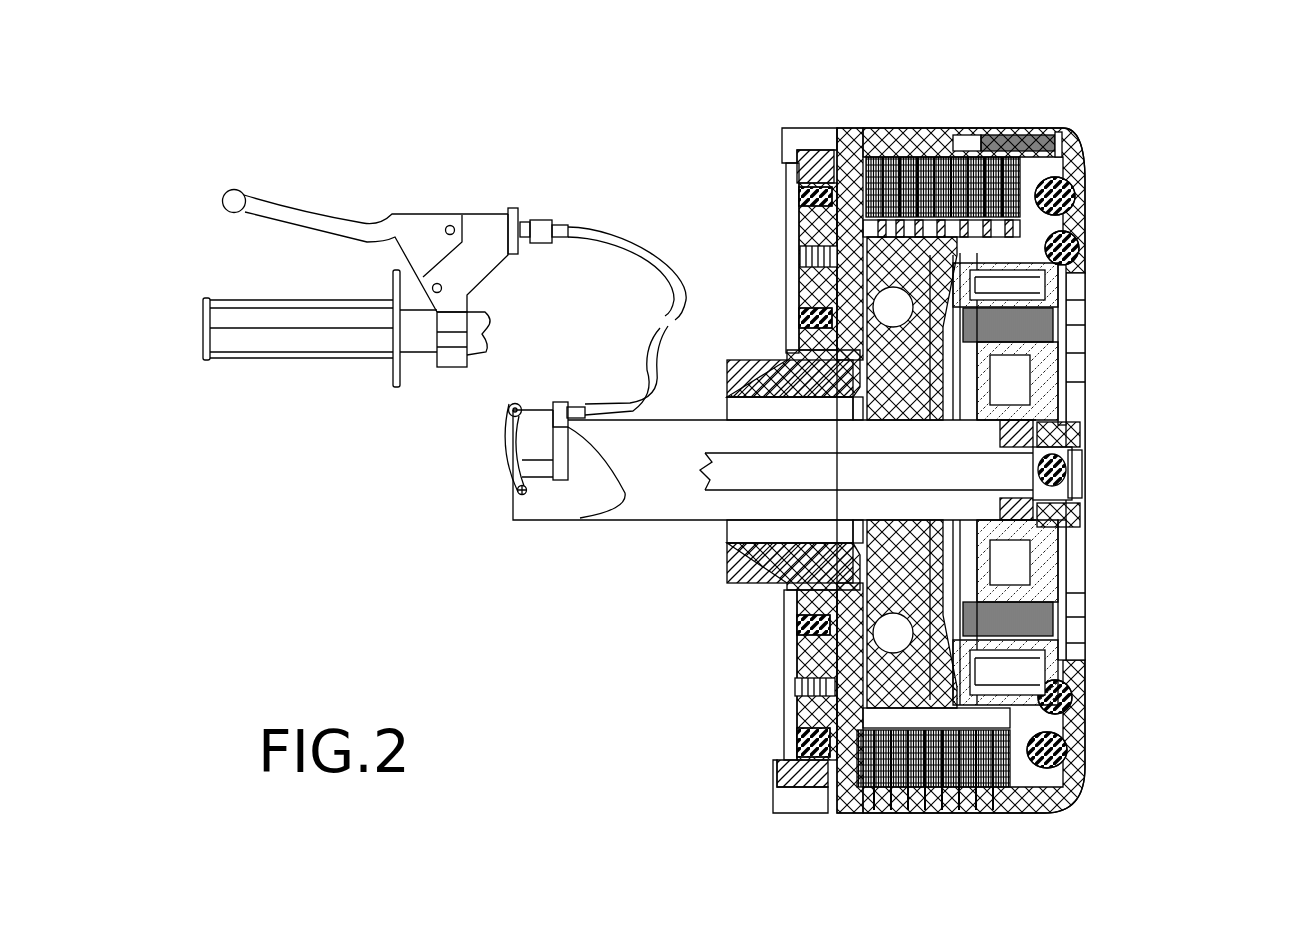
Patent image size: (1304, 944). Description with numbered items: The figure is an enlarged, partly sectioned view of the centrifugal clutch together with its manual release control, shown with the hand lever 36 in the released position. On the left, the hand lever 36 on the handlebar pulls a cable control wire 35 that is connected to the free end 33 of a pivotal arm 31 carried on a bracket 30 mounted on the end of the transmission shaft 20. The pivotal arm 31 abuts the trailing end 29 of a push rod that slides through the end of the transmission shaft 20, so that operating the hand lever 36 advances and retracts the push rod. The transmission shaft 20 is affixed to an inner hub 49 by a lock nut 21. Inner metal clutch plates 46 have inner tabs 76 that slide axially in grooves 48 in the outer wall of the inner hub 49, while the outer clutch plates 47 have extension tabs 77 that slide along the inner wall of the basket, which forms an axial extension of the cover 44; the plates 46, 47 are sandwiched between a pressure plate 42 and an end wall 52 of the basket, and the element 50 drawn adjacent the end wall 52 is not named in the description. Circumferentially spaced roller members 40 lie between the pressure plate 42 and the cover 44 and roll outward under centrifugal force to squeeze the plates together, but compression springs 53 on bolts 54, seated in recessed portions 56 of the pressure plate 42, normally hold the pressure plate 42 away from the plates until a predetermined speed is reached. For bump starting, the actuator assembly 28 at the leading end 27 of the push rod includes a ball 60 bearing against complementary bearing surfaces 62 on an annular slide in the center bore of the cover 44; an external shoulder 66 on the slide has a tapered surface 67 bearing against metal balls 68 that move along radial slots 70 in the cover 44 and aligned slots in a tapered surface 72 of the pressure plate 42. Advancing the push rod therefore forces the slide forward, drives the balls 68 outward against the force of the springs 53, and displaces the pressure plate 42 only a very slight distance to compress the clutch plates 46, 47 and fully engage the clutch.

The transmission shaft 20 is at (657, 523).
The lock nut 21 is at (930, 533).
The leading end 27 is at (1015, 475).
The actuator assembly 28 is at (1080, 502).
The trailing end 29 is at (518, 495).
The bracket 30 is at (558, 503).
The pivotal arm 31 is at (504, 452).
The free end 33 is at (508, 413).
The cable control wire 35 is at (541, 410).
The hand lever 36 is at (410, 214).
The roller members 40 is at (1057, 170).
The pressure plate 42 is at (1085, 197).
The cover 44 is at (1085, 234).
The inner frictional clutch plates 46 is at (860, 230).
The outer frictional clutch plates 47 is at (837, 150).
The grooves 48 is at (860, 717).
The inner hub 49 is at (883, 680).
The ring 50 is at (790, 735).
The end wall 52 is at (840, 817).
The compression springs 53 is at (1000, 625).
The bolts 54 is at (1062, 690).
The recessed portions 56 is at (1072, 753).
The ball 60 is at (1075, 472).
The bearing surfaces 62 is at (1078, 493).
The external shoulder 66 is at (1058, 518).
The tapered surface 67 is at (1017, 503).
The metal balls 68 is at (1025, 428).
The radial slots 70 is at (1030, 393).
The tapered surface 72 is at (1080, 360).
The inner tabs 76 is at (877, 240).
The extension tabs 77 is at (913, 128).